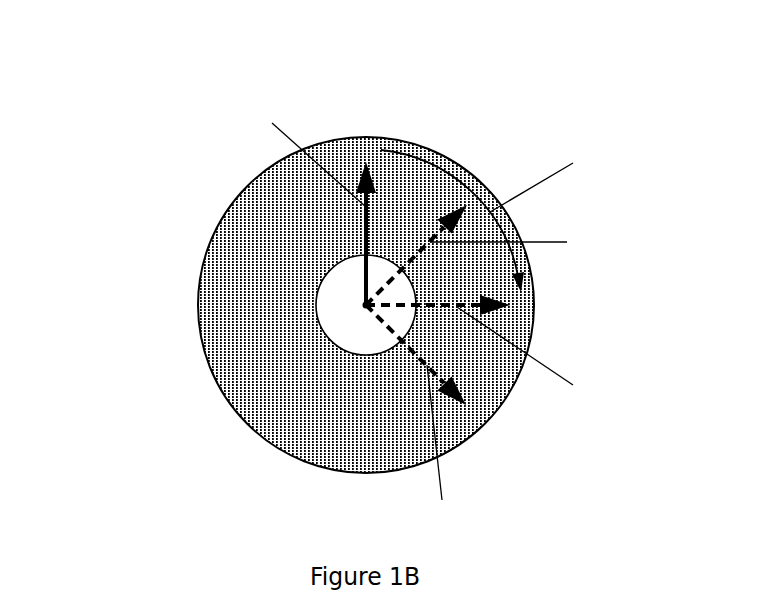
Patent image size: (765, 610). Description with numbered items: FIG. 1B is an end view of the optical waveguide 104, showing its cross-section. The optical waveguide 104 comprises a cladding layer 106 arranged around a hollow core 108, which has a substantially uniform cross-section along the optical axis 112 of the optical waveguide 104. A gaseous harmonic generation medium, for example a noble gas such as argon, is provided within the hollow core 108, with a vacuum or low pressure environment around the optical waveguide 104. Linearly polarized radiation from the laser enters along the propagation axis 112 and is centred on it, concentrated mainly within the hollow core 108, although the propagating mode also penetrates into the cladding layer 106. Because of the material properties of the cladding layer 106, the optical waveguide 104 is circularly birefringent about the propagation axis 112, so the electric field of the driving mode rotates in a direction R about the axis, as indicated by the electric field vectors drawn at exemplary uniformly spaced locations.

The optical waveguide 104 is at (324, 294).
The cladding layer 106 is at (313, 385).
The hollow core 108 is at (340, 280).
The optical axis 112 is at (363, 307).